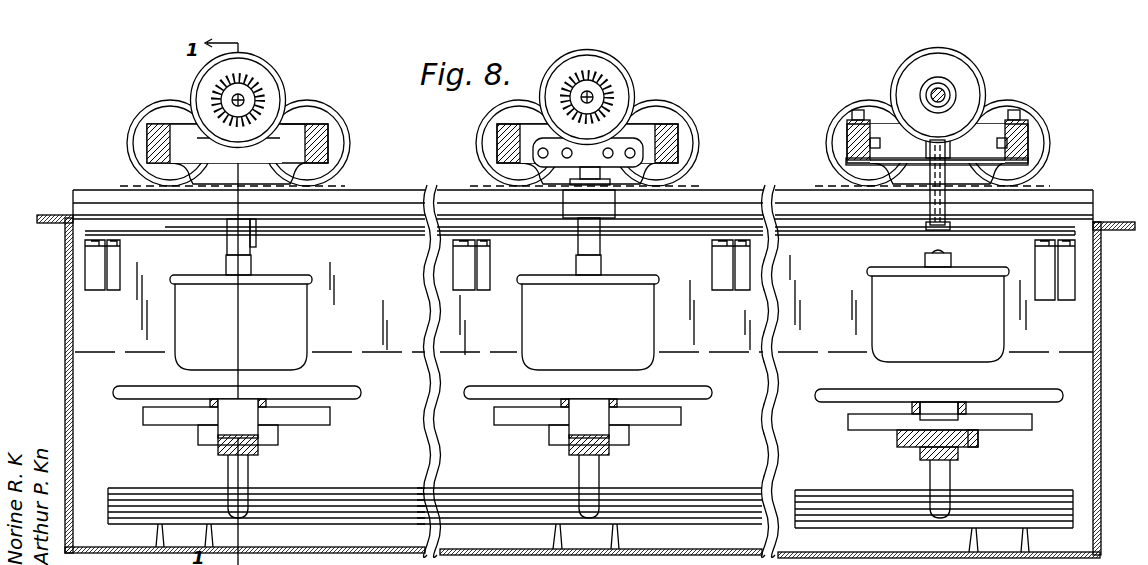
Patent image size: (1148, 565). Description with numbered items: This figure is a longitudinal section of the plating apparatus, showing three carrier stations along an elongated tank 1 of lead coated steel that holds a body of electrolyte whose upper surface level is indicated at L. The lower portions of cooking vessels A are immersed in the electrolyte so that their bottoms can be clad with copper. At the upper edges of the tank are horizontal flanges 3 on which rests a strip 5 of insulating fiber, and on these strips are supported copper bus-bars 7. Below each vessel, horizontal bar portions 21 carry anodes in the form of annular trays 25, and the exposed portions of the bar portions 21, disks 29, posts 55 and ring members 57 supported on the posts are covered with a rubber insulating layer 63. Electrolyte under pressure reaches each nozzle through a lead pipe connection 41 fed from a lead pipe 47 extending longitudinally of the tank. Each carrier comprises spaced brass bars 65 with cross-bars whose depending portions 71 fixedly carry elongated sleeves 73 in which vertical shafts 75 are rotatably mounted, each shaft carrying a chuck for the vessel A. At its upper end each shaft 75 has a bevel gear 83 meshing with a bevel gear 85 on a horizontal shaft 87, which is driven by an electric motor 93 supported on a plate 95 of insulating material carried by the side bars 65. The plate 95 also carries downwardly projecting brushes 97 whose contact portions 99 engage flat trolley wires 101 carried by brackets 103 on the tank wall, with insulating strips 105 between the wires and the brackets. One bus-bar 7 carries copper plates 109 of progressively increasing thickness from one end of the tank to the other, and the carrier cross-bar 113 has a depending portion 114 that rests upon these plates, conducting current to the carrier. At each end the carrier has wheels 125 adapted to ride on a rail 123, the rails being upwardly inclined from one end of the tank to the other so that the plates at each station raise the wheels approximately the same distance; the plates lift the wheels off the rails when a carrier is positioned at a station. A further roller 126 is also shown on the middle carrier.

The tank 1 is at (65, 360).
The flanges 3 is at (38, 215).
The strip of insulating material 5 is at (74, 201).
The bus-bars 7 is at (96, 188).
The horizontal portions of bars 21 is at (258, 452).
The annular trays 25 is at (322, 421).
The disks 29 is at (980, 437).
The pipe connection 41 is at (228, 470).
The lead pipe 47 is at (689, 492).
The posts 55 is at (606, 446).
The ring members 57 is at (340, 388).
The layer of insulating material 63 is at (218, 434).
The spaced bars 65 is at (147, 130).
The depending portions 71 is at (256, 232).
The elongated sleeves 73 is at (228, 248).
The vertical shafts 75 is at (228, 262).
The bevel gear 83 is at (218, 106).
The bevel gear 85 is at (218, 88).
The horizontal shaft 87 is at (248, 98).
The electric motor 93 is at (268, 80).
The plate of insulating material 95 is at (905, 165).
The brushes 97 is at (930, 203).
The contact portions 99 is at (930, 224).
The trolley wires 101 is at (190, 228).
The brackets 103 is at (112, 262).
The insulating strips 105 is at (335, 233).
The plates 109 is at (215, 183).
The cross-bar 113 is at (290, 150).
The depending portion 114 is at (277, 171).
The rail 123 is at (404, 190).
The wheels 125 is at (152, 118).
The roller 126 is at (492, 116).
The cooking vessels A is at (292, 330).
The upper surface level of electrolyte L is at (733, 353).